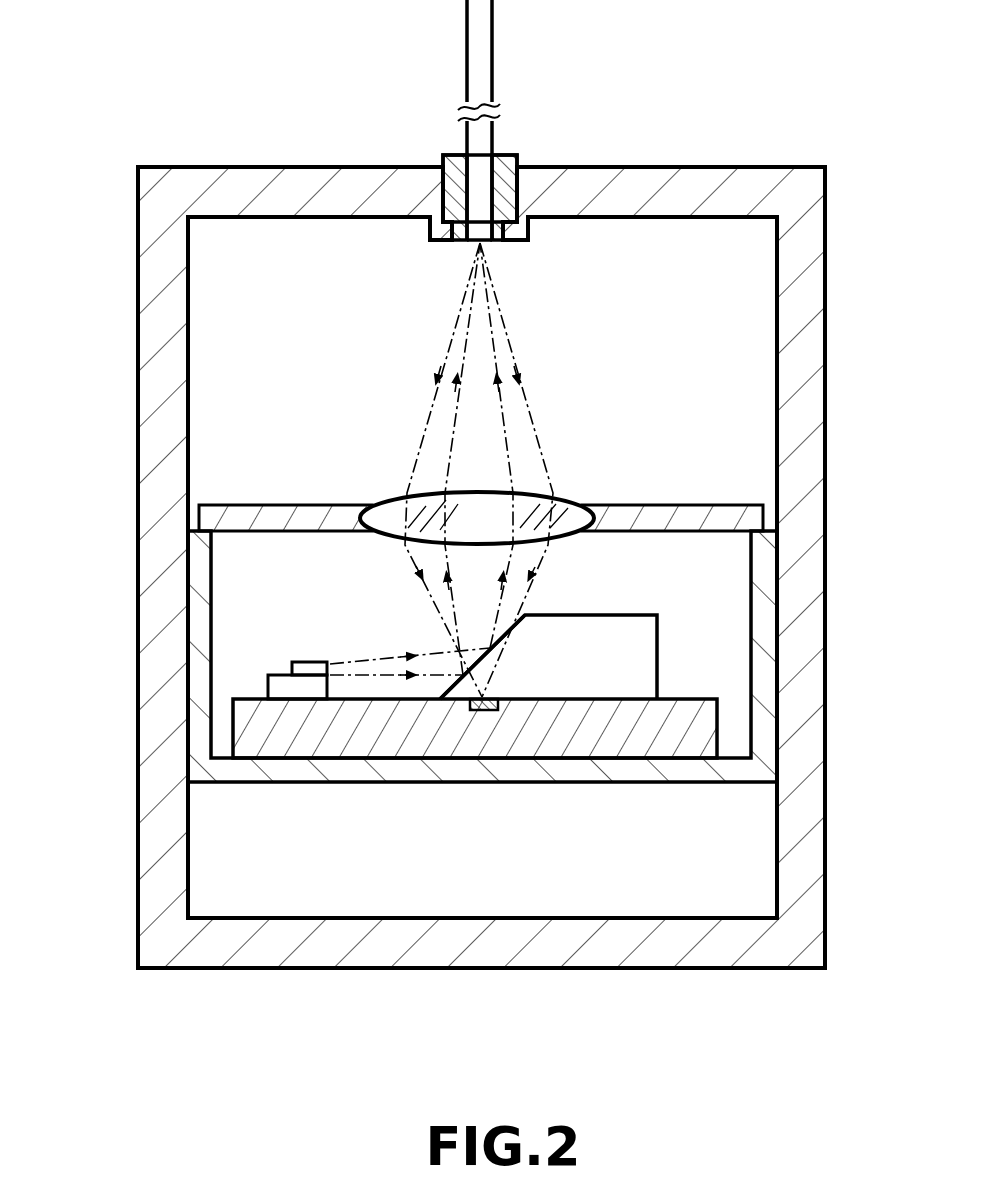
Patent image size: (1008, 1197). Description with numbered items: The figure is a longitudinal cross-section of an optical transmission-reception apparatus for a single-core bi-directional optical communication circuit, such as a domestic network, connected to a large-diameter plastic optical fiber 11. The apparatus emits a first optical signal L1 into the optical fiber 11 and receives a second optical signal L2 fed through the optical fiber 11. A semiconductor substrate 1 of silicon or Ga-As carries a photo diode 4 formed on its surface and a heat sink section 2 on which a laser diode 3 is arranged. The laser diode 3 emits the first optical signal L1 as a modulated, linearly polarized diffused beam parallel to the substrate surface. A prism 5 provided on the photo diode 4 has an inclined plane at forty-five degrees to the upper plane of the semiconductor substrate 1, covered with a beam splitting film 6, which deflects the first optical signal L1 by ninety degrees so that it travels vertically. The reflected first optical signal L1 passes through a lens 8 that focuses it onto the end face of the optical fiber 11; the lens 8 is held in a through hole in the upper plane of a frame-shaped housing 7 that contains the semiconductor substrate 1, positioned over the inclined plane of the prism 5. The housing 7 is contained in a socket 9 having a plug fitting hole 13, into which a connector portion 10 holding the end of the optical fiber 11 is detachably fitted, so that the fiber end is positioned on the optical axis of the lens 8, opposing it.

The semiconductor substrate 1 is at (630, 735).
The heat sink section 2 is at (270, 687).
The laser diode 3 is at (290, 665).
The photo diode 4 is at (487, 710).
The prism 5 is at (627, 615).
The beam splitting film 6 is at (523, 613).
The housing 7 is at (732, 503).
The lens 8 is at (573, 520).
The socket 9 is at (292, 167).
The connector portion 10 is at (510, 155).
The optical fiber 11 is at (493, 33).
The plug fitting hole 13 is at (452, 155).
The first optical signal L1 is at (455, 413).
The second optical signal L2 is at (447, 333).